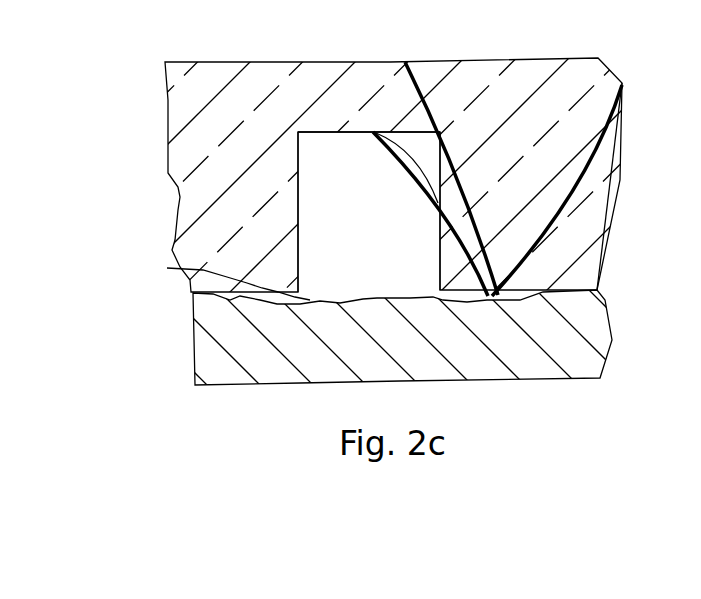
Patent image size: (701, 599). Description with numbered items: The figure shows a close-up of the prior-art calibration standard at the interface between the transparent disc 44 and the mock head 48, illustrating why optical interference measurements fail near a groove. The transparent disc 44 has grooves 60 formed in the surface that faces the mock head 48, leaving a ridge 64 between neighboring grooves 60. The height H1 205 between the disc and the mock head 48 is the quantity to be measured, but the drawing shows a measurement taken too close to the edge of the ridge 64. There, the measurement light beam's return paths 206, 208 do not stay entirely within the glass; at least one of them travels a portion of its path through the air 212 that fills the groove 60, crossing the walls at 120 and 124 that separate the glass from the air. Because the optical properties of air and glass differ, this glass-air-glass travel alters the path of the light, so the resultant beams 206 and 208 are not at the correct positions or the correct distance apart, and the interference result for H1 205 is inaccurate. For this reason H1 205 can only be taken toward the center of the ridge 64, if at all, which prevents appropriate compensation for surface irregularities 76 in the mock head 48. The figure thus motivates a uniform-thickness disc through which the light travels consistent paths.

The transparent disc 44 is at (198, 145).
The mock head 48 is at (227, 335).
The grooves 60 is at (317, 158).
The ridge 64 is at (240, 200).
The surface irregularities 76 is at (463, 290).
The wall 120 is at (355, 133).
The wall 124 is at (433, 258).
The H1 205 is at (583, 152).
The return path 206 is at (448, 62).
The return path 208 is at (368, 62).
The air 212 is at (537, 62).